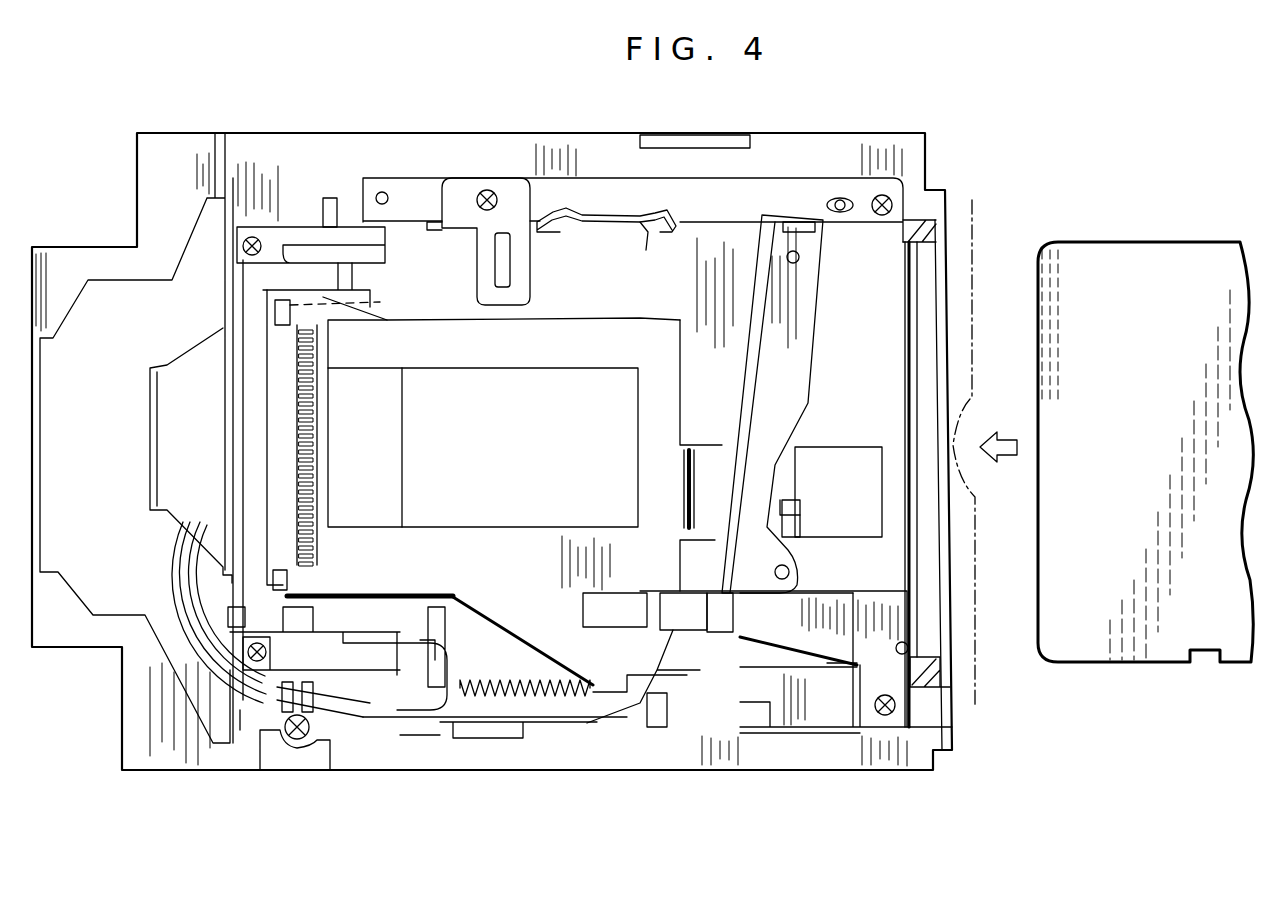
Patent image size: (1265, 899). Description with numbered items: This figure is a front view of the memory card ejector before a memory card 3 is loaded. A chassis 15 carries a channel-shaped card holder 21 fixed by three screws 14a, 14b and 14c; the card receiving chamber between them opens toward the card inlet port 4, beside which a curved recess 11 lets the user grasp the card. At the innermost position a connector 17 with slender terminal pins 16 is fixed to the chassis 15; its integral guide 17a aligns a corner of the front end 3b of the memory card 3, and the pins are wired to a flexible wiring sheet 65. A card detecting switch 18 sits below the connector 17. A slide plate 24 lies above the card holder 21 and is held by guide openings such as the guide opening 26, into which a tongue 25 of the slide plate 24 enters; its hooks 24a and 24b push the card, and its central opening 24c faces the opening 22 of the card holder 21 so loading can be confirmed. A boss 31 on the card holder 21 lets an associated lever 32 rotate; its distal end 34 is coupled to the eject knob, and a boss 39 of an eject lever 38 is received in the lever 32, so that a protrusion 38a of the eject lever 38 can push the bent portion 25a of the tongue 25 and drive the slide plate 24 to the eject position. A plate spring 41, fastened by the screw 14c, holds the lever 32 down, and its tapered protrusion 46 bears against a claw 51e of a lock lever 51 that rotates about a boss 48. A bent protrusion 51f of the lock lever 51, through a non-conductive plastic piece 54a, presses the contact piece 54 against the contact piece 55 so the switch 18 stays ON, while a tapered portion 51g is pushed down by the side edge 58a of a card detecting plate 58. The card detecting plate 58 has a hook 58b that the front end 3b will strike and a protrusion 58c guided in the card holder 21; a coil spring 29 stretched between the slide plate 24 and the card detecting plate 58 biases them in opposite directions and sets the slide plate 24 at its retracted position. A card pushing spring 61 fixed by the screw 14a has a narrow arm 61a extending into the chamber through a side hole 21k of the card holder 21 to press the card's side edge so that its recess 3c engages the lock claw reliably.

The memory card 3 is at (1111, 677).
The front end of memory card 3b is at (1033, 620).
The recess of memory card 3c is at (1204, 664).
The card inlet port 4 is at (972, 240).
The curved recess 11 is at (965, 483).
The screw 14a is at (490, 190).
The screw 14b is at (905, 200).
The screw 14c is at (915, 713).
The chassis 15 is at (927, 135).
The terminal pins 16 is at (293, 325).
The connector 17 is at (293, 430).
The guide 17a is at (303, 227).
The card detecting switch 18 is at (262, 843).
The card holder 21 is at (735, 222).
The side hole 21k is at (648, 250).
The opening 22 is at (402, 421).
The slide plate 24 is at (590, 306).
The hook 24a is at (380, 302).
The hook 24b is at (262, 600).
The opening 24c is at (492, 368).
The tongue 25 is at (702, 445).
The bent portion 25a is at (817, 440).
The guide opening 26 is at (855, 455).
The coil spring 29 is at (547, 723).
The boss 31 is at (800, 258).
The associated lever 32 is at (740, 312).
The distal end of associated lever 34 is at (740, 703).
The eject lever 38 is at (803, 527).
The protrusion 38a is at (795, 503).
The boss 39 is at (775, 572).
The plate spring 41 is at (815, 659).
The tapered protrusion 46 is at (665, 733).
The boss 48 is at (540, 703).
The lock lever 51 is at (422, 740).
The claw 51e is at (625, 678).
The bent protrusion 51f is at (425, 660).
The tapered portion 51g is at (420, 742).
The contact piece 54 is at (300, 745).
The plastic piece 54a is at (378, 720).
The contact piece 55 is at (340, 745).
The card detecting plate 58 is at (428, 580).
The protrusion 58a is at (460, 600).
The hook 58b is at (318, 605).
The protrusion 58c is at (228, 611).
The card pushing spring 61 is at (455, 178).
The narrow arm 61a is at (668, 222).
The flexible wiring sheet 65 is at (150, 432).